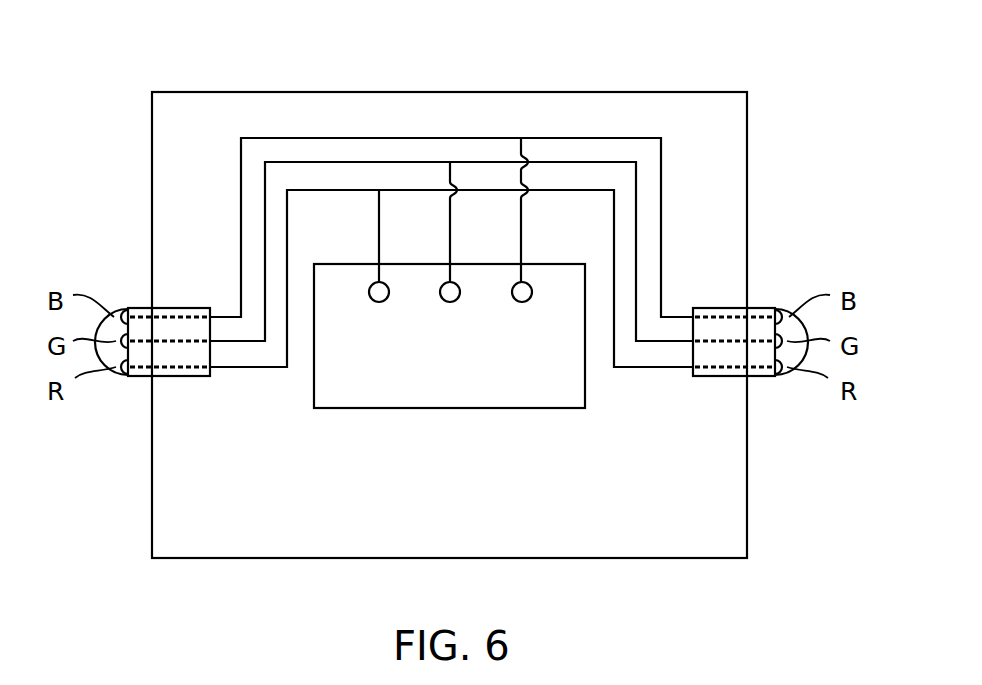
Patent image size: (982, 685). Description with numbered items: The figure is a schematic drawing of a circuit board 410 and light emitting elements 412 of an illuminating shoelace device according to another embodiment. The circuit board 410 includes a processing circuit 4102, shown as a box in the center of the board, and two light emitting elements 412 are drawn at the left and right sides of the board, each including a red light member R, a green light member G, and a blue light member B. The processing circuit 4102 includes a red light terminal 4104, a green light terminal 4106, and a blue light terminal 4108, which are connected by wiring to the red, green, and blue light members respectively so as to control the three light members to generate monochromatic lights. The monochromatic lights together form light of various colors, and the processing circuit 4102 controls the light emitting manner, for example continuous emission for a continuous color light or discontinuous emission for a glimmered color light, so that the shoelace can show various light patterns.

The circuit board 410 is at (438, 92).
The light emitting elements 412 is at (134, 306).
The processing circuit 4102 is at (327, 410).
The red light terminal 4104 is at (379, 302).
The green light terminal 4106 is at (450, 302).
The blue light terminal 4108 is at (522, 302).